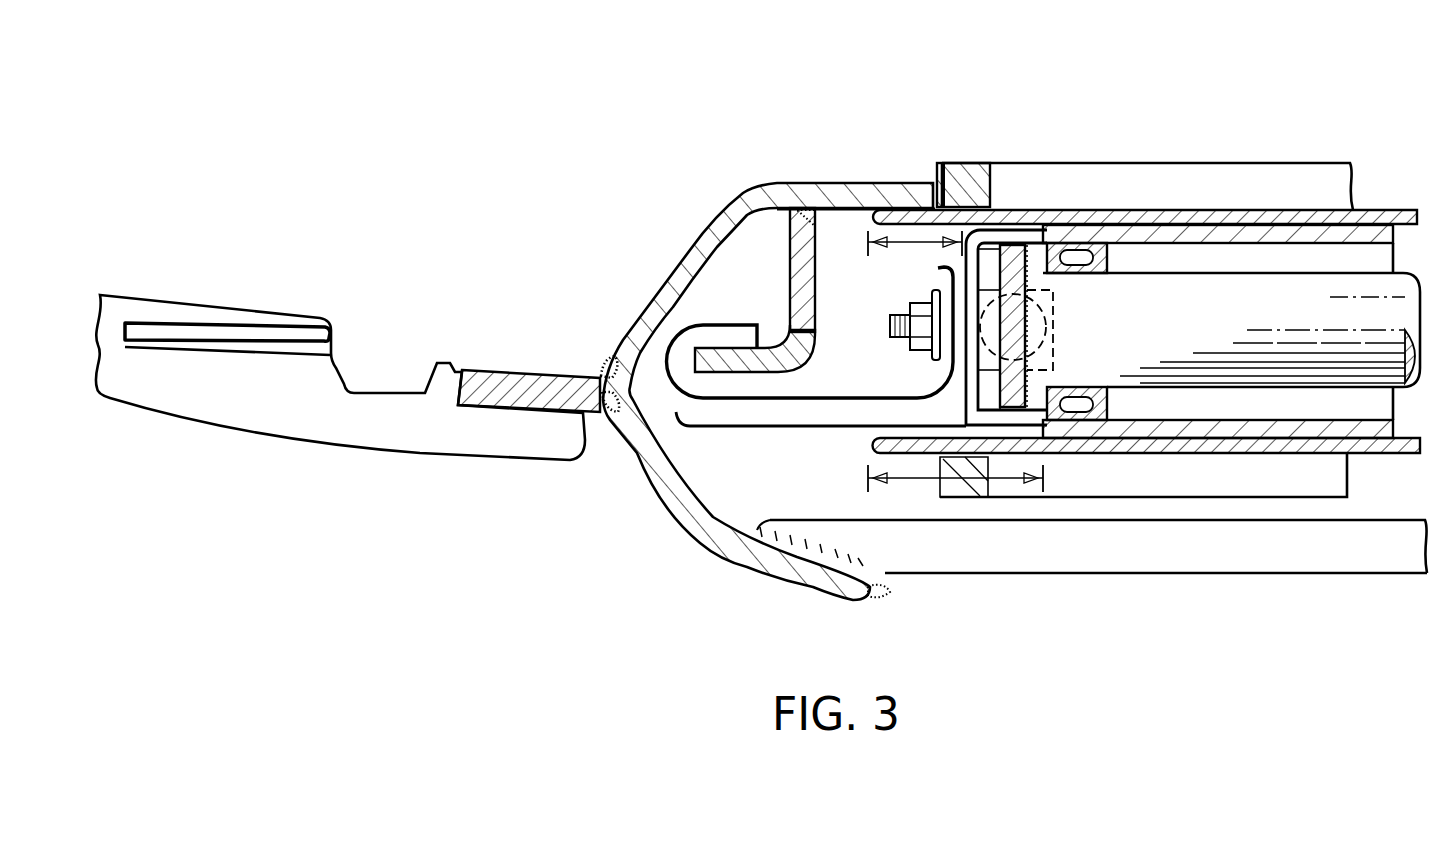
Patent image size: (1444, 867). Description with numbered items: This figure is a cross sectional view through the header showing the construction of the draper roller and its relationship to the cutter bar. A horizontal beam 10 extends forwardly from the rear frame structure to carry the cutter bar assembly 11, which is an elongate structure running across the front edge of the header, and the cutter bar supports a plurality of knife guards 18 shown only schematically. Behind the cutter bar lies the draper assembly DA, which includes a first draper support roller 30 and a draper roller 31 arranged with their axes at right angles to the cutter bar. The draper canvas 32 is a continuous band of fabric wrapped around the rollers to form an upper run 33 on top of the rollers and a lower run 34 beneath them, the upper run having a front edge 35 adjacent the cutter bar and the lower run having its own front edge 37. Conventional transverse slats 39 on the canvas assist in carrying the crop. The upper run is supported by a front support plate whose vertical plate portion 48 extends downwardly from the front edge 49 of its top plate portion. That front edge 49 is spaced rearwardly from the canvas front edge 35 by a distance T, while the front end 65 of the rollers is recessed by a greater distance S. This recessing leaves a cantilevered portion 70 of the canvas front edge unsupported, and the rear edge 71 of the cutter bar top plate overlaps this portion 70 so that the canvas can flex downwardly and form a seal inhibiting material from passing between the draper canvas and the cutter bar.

The beam 10 is at (1130, 582).
The cutter bar assembly 11 is at (632, 281).
The knife guard 18 is at (298, 313).
The first draper support roller 30 is at (1300, 230).
The draper roller 31 is at (1230, 422).
The draper canvas 32 is at (1115, 200).
The upper run 33 is at (1186, 222).
The lower run 34 is at (1377, 453).
The front edge of the upper run 35 is at (847, 207).
The front edge of the lower run 37 is at (863, 444).
The transverse slats 39 is at (1258, 185).
The vertical plate portion 48 is at (940, 263).
The front edge of the top plate portion 49 is at (976, 230).
The front end of the rollers 65 is at (1048, 387).
The cantilevered portion of the front edge 70 is at (903, 207).
The rear edge of the top plate portion 71 is at (942, 207).
The distance T is at (910, 245).
The distance S is at (940, 497).
The draper assembly DA is at (1050, 100).